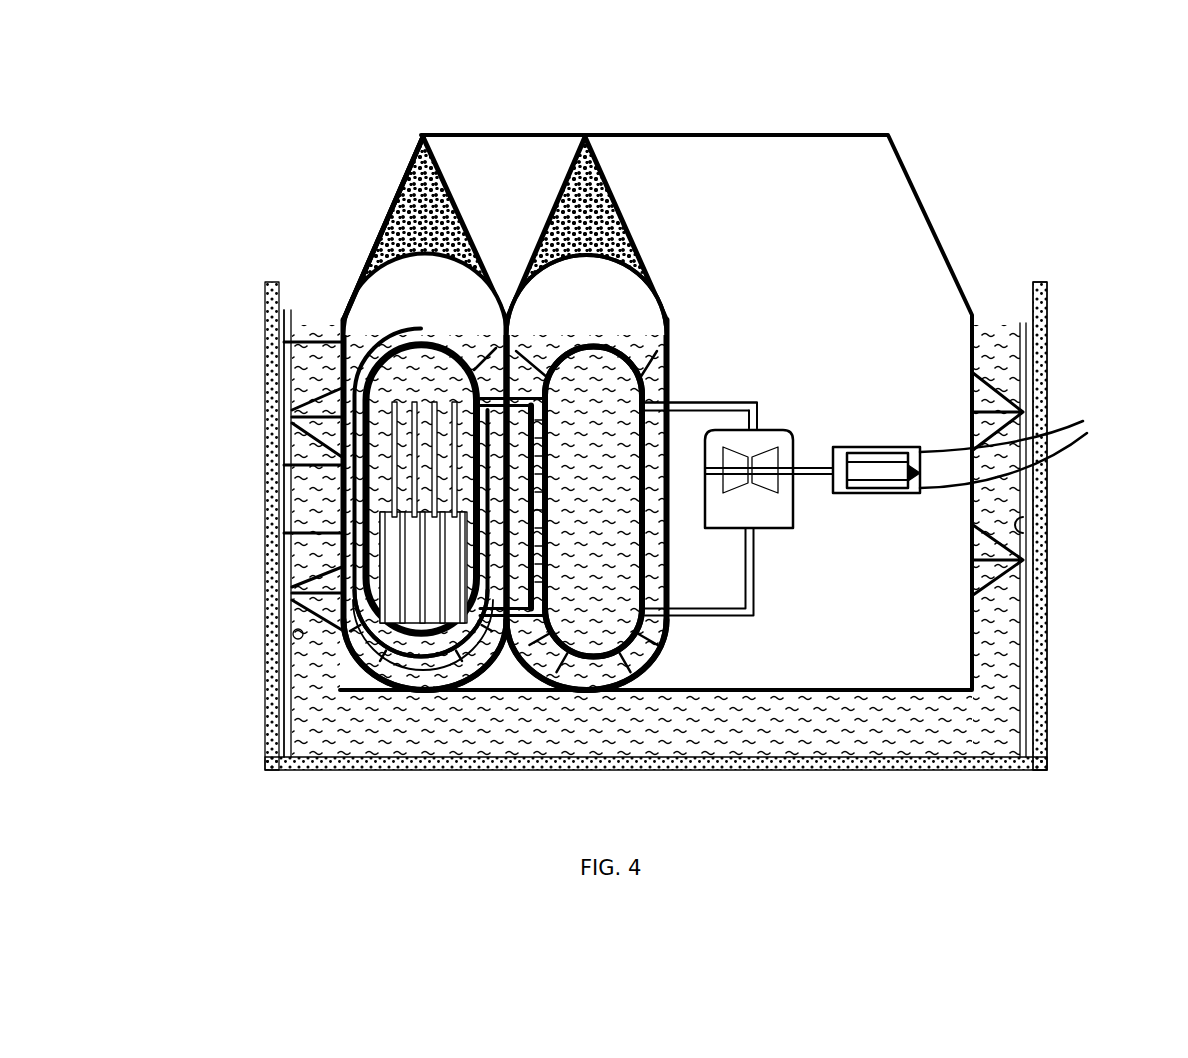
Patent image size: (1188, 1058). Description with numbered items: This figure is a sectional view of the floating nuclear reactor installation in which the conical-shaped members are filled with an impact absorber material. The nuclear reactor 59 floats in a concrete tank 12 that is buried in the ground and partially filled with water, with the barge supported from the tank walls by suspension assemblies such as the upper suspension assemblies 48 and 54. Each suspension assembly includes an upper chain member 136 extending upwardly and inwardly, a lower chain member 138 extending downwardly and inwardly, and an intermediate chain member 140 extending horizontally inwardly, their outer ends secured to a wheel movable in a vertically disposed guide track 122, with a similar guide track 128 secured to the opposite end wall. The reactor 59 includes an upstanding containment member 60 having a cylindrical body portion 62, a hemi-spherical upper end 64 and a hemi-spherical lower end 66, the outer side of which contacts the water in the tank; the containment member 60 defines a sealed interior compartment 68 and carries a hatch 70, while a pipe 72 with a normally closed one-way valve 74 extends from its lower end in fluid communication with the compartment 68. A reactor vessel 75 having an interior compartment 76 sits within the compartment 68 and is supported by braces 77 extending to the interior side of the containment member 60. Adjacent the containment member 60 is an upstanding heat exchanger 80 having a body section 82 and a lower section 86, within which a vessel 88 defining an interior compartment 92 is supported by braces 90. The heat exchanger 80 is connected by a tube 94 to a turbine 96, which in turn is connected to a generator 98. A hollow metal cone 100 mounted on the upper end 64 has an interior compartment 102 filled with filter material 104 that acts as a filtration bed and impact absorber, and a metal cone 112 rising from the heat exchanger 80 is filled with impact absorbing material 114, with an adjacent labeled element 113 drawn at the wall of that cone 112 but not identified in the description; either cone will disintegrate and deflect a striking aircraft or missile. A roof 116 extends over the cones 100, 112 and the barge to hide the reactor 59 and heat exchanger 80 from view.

The concrete tank 12 is at (1054, 297).
The upper suspension assembly 48 is at (1006, 359).
The upper suspension assembly 54 is at (286, 375).
The nuclear reactor 59 is at (334, 498).
The containment member 60 is at (334, 350).
The cylindrical body portion 62 is at (334, 482).
The hemi-spherical upper end 64 is at (398, 253).
The hemi-spherical lower end 66 is at (447, 657).
The sealed interior compartment 68 is at (426, 306).
The hatch 70 is at (292, 650).
The pipe 72 is at (380, 668).
The one-way valve 74 is at (376, 673).
The reactor vessel 75 is at (372, 543).
The interior compartment 76 is at (427, 640).
The braces 77 is at (480, 663).
The heat exchanger 80 is at (681, 320).
The body section 82 is at (692, 407).
The lower section 86 is at (642, 673).
The vessel 88 is at (603, 660).
The braces 90 is at (648, 642).
The interior compartment 92 is at (633, 281).
The tube 94 is at (752, 407).
The turbine 96 is at (775, 433).
The generator 98 is at (888, 493).
The hollow metal cone 100 is at (388, 197).
The interior compartment 102 is at (393, 248).
The filter material 104 is at (437, 202).
The metal cone 112 is at (630, 243).
The roof wall 113 is at (626, 194).
The impact absorbing material 114 is at (627, 271).
The roof 116 is at (866, 124).
The guide track 122 is at (1037, 512).
The guide track 128 is at (292, 636).
The upper chain member 136 is at (1023, 397).
The lower chain member 138 is at (1040, 433).
The intermediate chain member 140 is at (1022, 413).